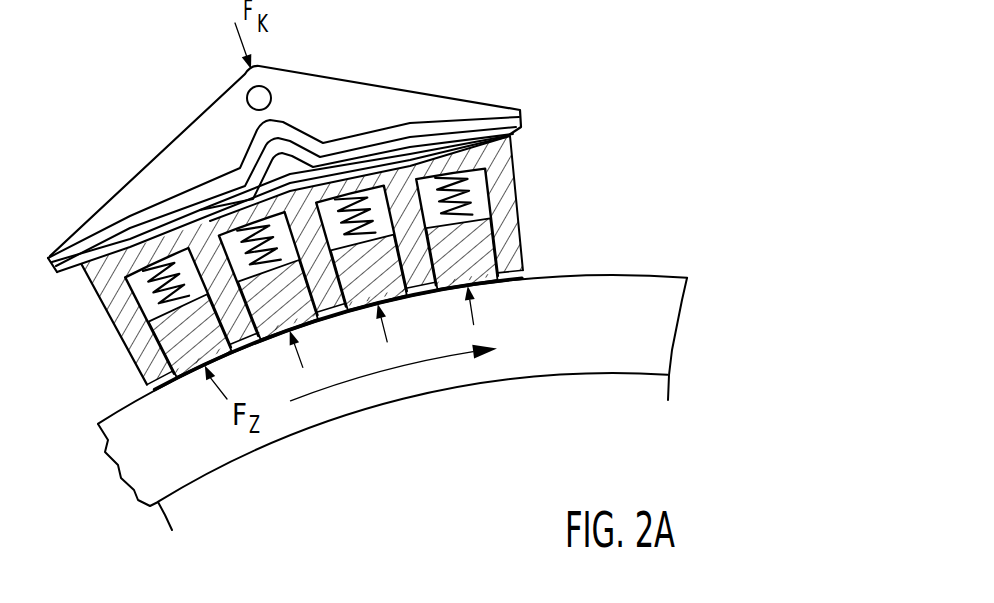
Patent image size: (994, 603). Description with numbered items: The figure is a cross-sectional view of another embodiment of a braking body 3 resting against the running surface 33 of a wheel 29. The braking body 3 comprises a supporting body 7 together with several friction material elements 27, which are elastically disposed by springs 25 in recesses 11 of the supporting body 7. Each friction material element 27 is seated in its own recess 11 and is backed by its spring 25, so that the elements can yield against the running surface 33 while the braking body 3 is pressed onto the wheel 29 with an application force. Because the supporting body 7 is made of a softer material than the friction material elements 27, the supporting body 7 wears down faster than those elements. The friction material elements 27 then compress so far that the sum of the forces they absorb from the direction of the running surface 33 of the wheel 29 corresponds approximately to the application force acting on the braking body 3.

The braking body 3 is at (347, 65).
The supporting body 7 is at (443, 167).
The recesses 11 is at (467, 180).
The springs 25 is at (378, 190).
The friction material elements 27 is at (470, 252).
The wheel 29 is at (590, 347).
The running surface 33 is at (616, 264).